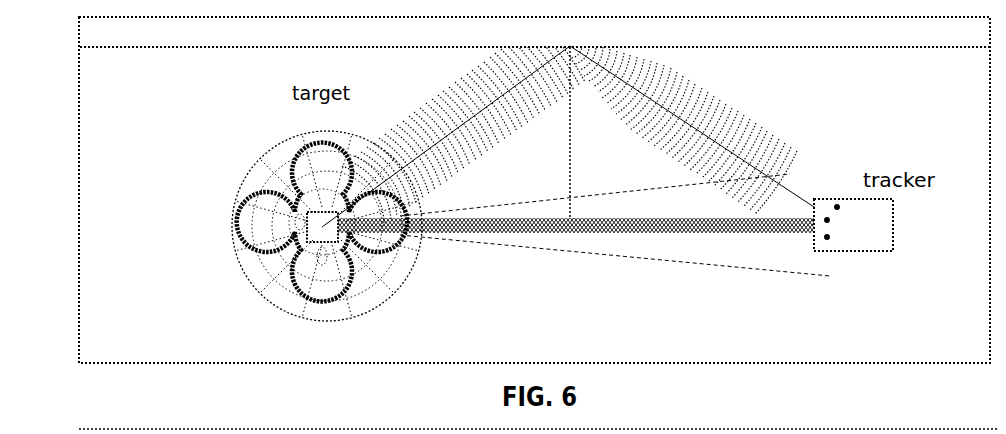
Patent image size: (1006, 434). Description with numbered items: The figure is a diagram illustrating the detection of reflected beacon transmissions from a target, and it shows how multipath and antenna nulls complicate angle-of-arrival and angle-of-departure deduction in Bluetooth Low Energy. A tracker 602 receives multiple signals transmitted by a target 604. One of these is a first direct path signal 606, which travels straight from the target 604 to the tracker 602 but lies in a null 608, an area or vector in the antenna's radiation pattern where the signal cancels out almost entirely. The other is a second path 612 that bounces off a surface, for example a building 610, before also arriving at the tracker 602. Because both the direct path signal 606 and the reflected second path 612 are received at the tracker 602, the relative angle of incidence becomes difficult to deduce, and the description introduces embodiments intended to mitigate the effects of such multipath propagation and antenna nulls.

The tracker 602 is at (853, 225).
The target 604 is at (246, 194).
The first direct path signal 606 is at (627, 233).
The null 608 is at (400, 232).
The building 610 is at (690, 49).
The second path 612 is at (747, 121).